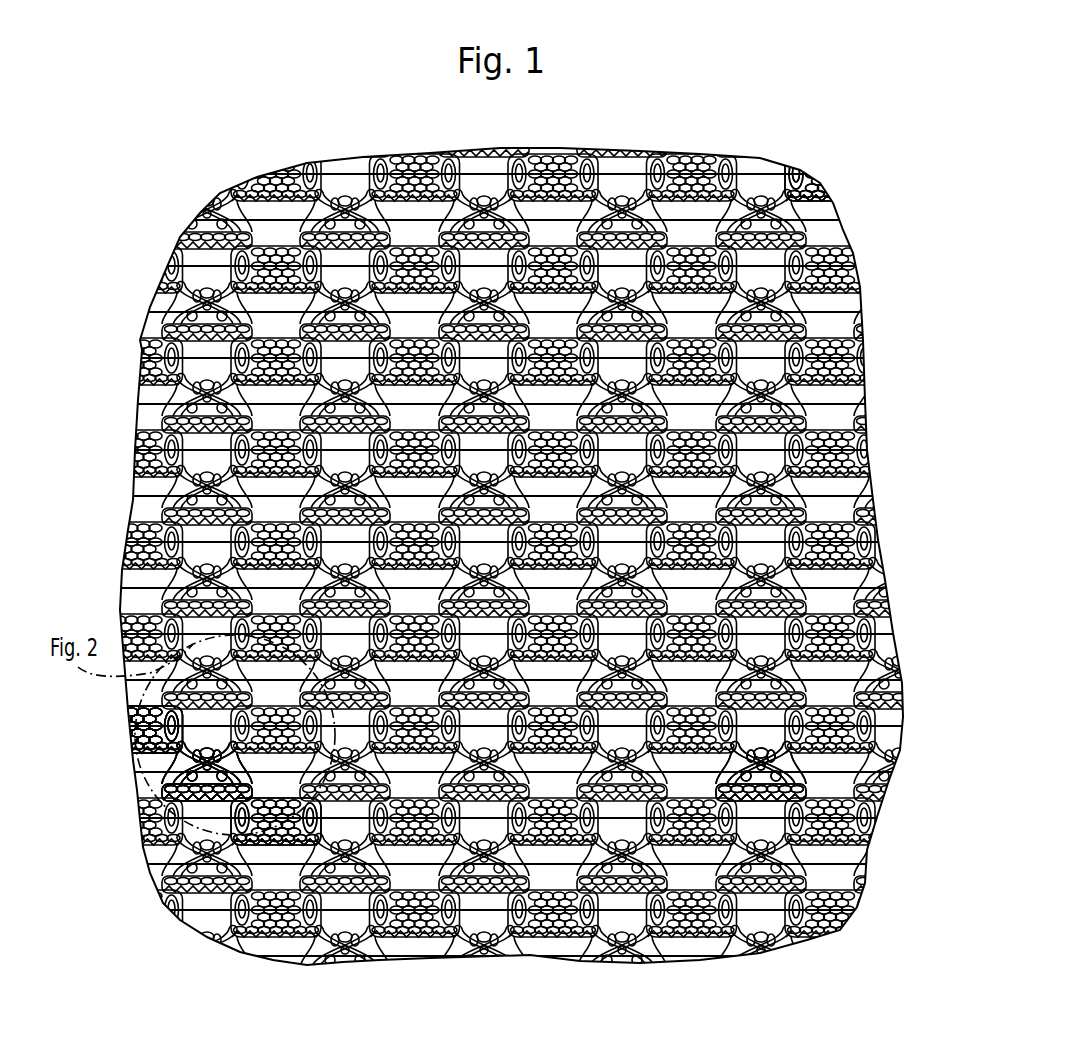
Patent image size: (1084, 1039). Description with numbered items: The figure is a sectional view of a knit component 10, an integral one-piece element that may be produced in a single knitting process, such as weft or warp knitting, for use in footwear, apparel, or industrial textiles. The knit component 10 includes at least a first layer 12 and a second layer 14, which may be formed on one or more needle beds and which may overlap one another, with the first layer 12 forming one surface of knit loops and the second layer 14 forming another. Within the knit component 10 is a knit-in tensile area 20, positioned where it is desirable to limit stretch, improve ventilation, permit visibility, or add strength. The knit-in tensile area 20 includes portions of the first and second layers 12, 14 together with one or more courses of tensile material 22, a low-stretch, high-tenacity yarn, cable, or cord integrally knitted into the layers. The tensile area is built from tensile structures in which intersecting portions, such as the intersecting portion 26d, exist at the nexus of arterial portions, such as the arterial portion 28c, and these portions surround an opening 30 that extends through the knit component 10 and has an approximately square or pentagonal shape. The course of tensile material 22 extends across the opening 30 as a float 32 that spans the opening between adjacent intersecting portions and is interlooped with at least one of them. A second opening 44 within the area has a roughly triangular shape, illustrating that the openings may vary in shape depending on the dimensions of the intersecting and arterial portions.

The knit component 10 is at (818, 128).
The first layer 12 is at (826, 188).
The second layer 14 is at (833, 205).
The knit-in tensile area 20 is at (687, 134).
The course of tensile material 22 is at (770, 723).
The intersecting portion 26d is at (133, 746).
The arterial portion 28c is at (152, 758).
The opening 30 is at (150, 778).
The float 32 is at (137, 723).
The second opening 44 is at (235, 795).